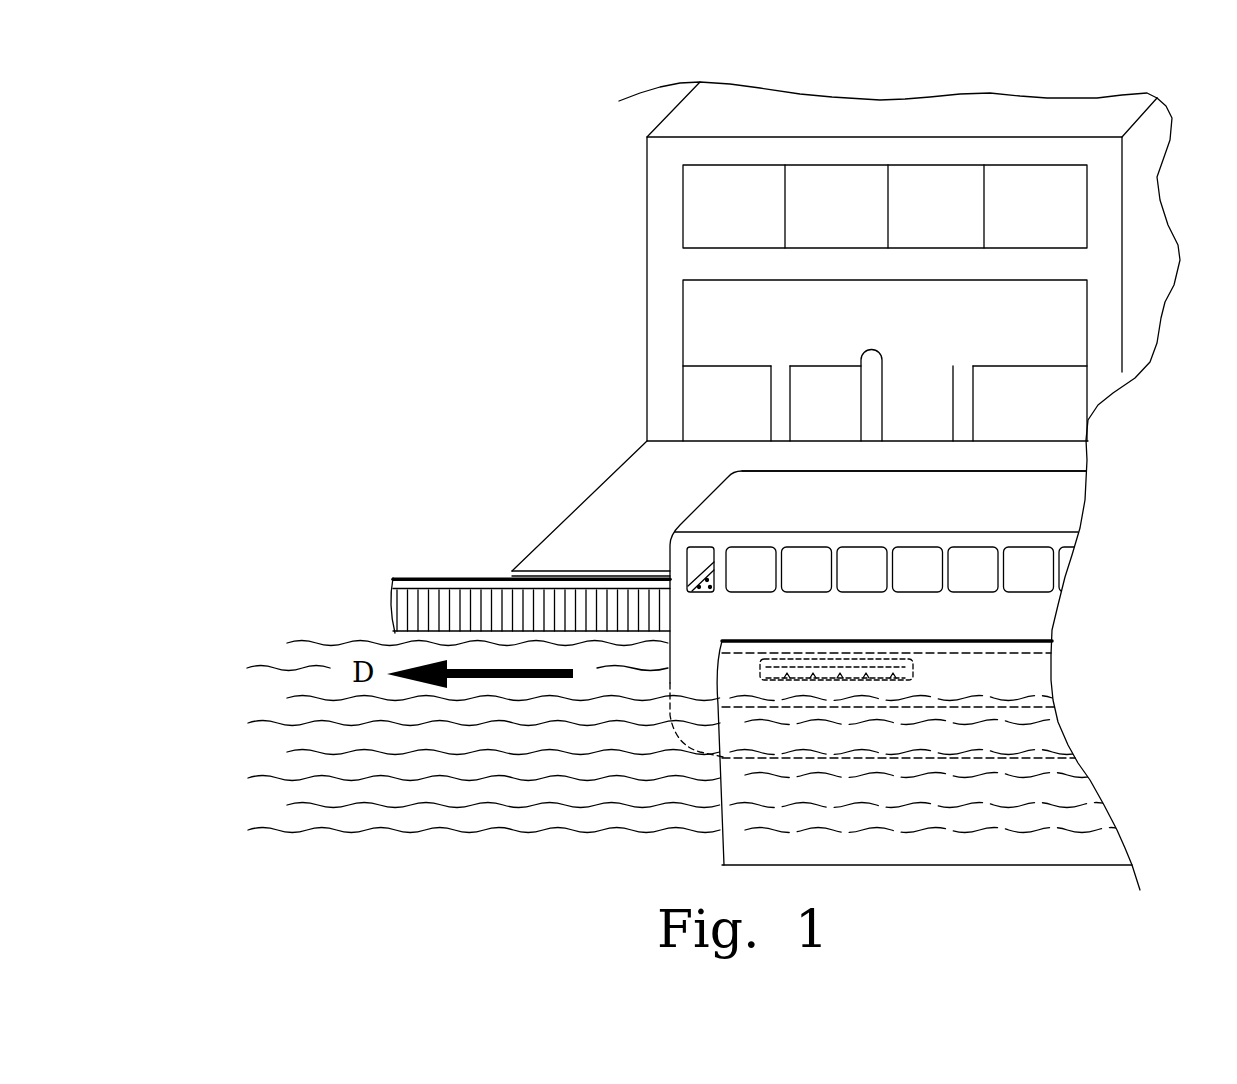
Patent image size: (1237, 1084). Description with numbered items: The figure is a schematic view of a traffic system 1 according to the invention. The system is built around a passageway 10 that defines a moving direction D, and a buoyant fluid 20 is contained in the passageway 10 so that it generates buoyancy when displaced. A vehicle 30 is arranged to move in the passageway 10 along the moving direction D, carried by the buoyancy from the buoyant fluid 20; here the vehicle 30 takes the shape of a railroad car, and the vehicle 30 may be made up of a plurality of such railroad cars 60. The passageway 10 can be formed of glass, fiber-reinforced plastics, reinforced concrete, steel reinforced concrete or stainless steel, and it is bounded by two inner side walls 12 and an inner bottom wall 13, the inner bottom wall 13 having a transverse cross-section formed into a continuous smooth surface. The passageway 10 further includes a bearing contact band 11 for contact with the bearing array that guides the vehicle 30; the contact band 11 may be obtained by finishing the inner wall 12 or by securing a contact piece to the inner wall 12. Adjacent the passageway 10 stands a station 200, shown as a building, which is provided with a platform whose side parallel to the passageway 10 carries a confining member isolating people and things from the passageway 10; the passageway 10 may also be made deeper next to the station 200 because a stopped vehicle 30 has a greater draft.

The traffic system 1 is at (517, 320).
The station 200 is at (722, 202).
The passageway 10 is at (446, 581).
The bearing contact band 11 is at (412, 615).
The inner wall 12 is at (413, 587).
The inner bottom wall 13 is at (1077, 865).
The buoyant fluid 20 is at (498, 763).
The vehicle 30 is at (880, 518).
The railroad car 60 is at (1017, 501).